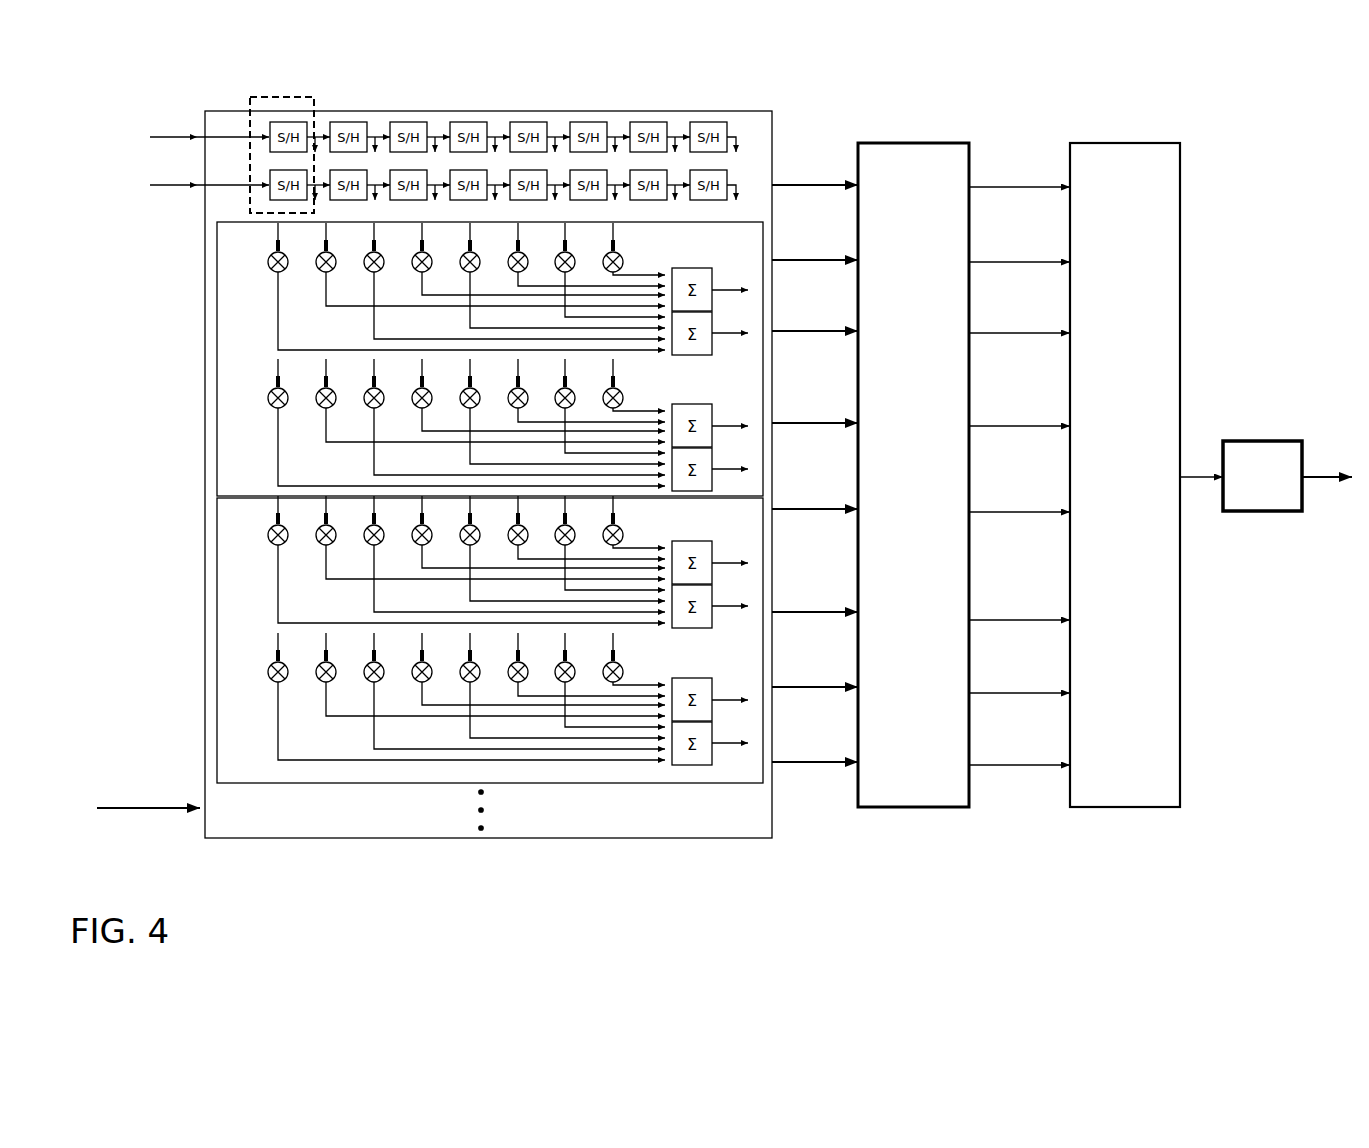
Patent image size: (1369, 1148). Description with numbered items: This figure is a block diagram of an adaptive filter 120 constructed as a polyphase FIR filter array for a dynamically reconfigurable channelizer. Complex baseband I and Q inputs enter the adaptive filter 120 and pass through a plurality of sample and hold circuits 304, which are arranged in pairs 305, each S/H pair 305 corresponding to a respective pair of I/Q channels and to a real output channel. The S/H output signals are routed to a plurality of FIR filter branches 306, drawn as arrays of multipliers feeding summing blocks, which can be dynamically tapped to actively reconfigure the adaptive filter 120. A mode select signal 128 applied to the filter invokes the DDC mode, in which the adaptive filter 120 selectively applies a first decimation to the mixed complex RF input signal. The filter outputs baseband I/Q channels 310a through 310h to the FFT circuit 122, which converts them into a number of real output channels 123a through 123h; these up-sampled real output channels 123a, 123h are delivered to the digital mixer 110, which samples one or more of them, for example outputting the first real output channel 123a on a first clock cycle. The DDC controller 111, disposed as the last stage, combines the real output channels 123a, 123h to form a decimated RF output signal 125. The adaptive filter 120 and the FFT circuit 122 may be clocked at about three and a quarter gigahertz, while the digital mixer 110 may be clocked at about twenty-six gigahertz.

The adaptive filter 120 is at (168, 105).
The sample and hold (S/H) circuits 304 is at (420, 108).
The S/H pair 305 is at (277, 97).
The FIR filter branches 306 is at (268, 331).
The I/Q channel 310a is at (812, 181).
The I/Q channel 310h is at (797, 772).
The FFT circuit 122 is at (936, 141).
The first real output channel 123a is at (1026, 182).
The real output channel 123h is at (992, 770).
The digital mixer 110 is at (1172, 140).
The DDC controller 111 is at (1252, 441).
The decimated RF output signal 125 is at (1323, 474).
The mode select signal 128 is at (123, 812).